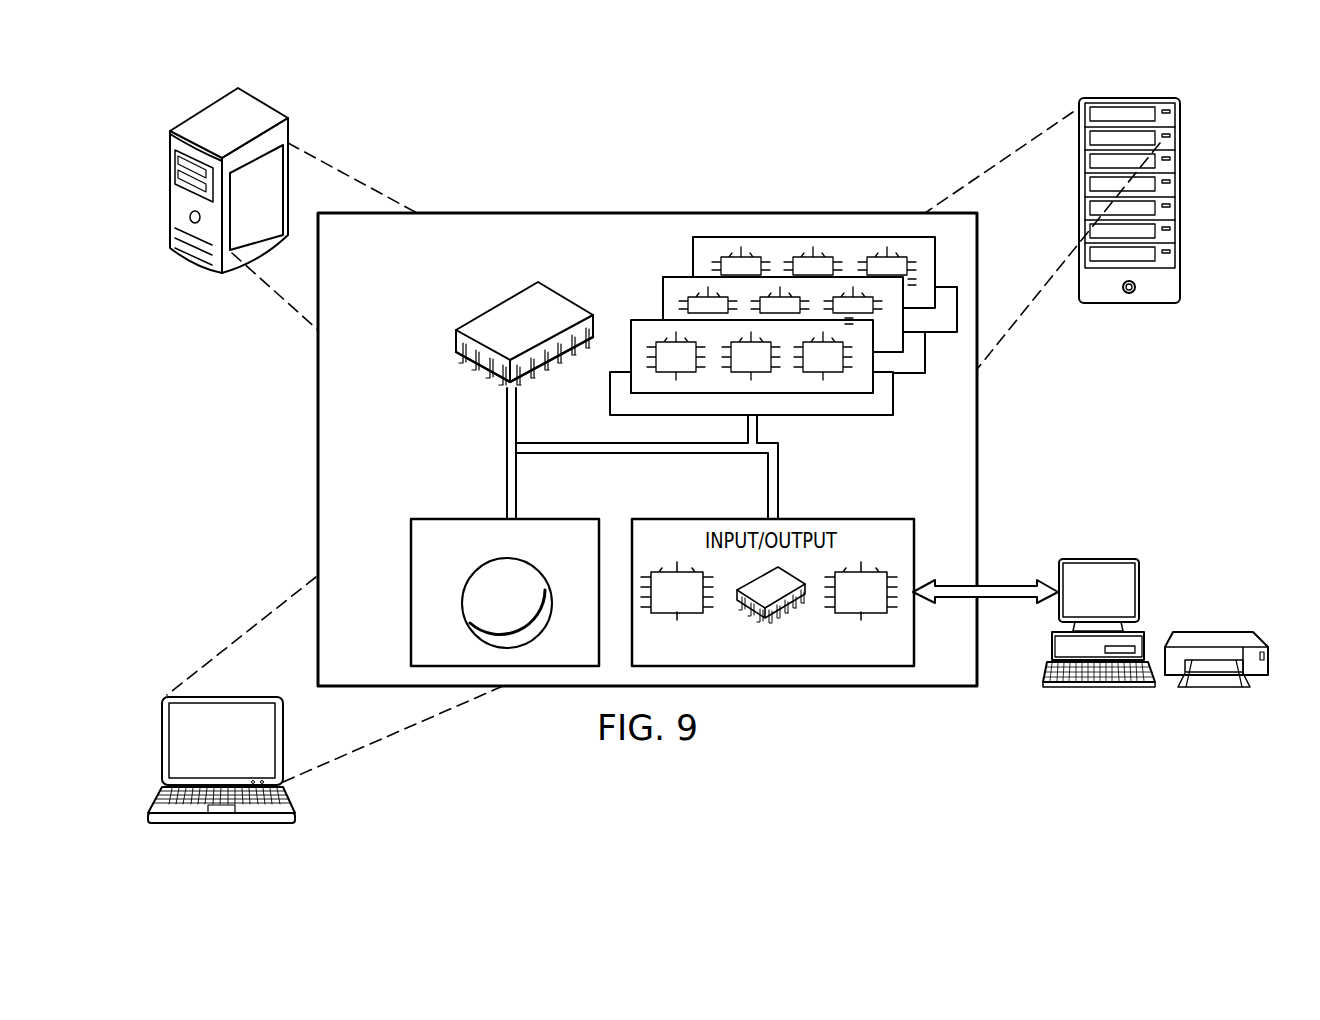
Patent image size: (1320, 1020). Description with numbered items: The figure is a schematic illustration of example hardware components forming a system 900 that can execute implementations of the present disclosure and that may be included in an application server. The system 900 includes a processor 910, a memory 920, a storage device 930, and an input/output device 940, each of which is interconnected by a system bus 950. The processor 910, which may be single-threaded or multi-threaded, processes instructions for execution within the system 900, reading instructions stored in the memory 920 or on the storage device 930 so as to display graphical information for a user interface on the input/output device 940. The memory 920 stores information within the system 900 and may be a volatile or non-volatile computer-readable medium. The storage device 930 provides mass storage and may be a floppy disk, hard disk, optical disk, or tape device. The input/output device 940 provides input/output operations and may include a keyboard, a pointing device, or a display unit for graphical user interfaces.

The system 900 is at (488, 150).
The processor 910 is at (497, 305).
The memory 920 is at (840, 417).
The storage device 930 is at (411, 592).
The input/output device 940 is at (1098, 688).
The system bus 950 is at (640, 455).